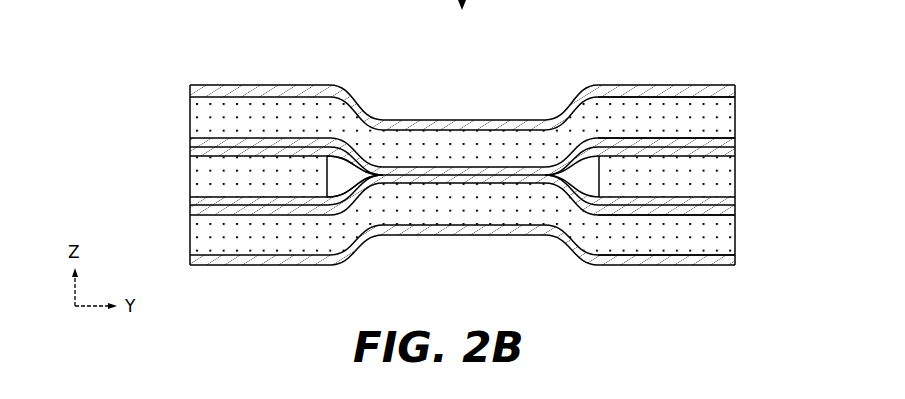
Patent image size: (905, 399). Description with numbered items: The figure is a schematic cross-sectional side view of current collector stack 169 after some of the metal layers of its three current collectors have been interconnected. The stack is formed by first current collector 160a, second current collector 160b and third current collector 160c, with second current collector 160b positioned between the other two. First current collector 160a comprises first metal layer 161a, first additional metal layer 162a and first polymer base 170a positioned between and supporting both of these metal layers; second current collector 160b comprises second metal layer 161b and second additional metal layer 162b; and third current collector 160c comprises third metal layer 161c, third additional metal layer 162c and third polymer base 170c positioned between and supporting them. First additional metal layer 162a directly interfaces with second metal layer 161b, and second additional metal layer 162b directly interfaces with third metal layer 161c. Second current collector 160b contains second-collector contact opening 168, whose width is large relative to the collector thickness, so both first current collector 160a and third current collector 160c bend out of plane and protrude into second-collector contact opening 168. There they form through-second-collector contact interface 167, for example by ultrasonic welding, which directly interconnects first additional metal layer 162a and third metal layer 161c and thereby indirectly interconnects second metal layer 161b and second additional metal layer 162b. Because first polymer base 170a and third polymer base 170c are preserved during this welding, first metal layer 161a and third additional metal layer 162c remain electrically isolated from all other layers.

The current collector stack 169 is at (185, 63).
The first current collector 160a is at (170, 88).
The second current collector 160b is at (170, 143).
The third current collector 160c is at (170, 203).
The first metal layer 161a is at (735, 90).
The second metal layer 161b is at (735, 152).
The third metal layer 161c is at (735, 212).
The first additional metal layer 162a is at (735, 141).
The second additional metal layer 162b is at (735, 198).
The third additional metal layer 162c is at (735, 267).
The through-second-collector contact interface 167 is at (427, 175).
The second-collector contact opening 168 is at (349, 165).
The first polymer base 170a is at (630, 107).
The third polymer base 170c is at (643, 242).